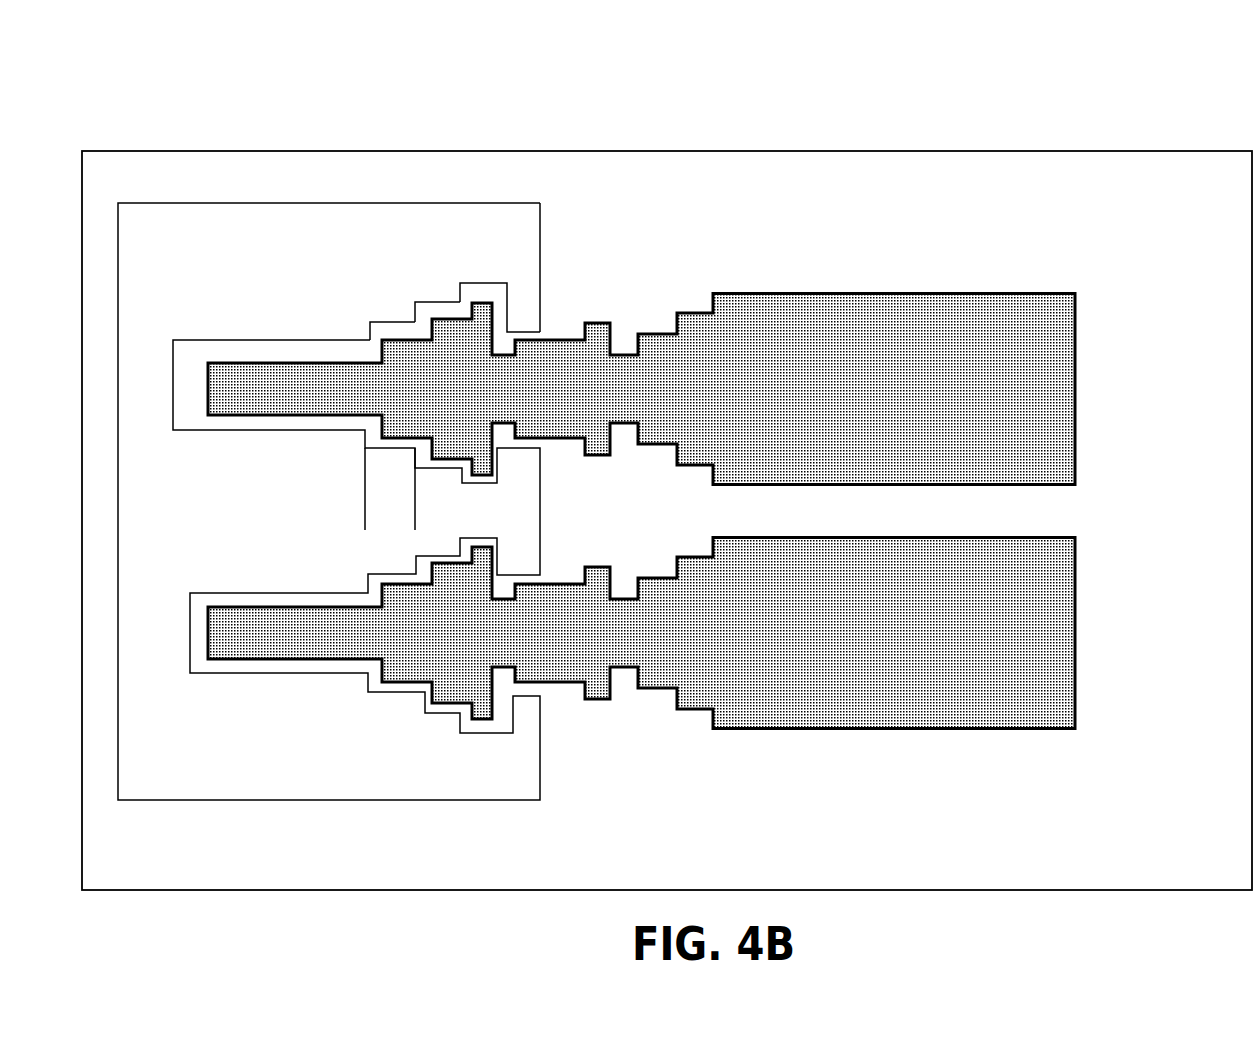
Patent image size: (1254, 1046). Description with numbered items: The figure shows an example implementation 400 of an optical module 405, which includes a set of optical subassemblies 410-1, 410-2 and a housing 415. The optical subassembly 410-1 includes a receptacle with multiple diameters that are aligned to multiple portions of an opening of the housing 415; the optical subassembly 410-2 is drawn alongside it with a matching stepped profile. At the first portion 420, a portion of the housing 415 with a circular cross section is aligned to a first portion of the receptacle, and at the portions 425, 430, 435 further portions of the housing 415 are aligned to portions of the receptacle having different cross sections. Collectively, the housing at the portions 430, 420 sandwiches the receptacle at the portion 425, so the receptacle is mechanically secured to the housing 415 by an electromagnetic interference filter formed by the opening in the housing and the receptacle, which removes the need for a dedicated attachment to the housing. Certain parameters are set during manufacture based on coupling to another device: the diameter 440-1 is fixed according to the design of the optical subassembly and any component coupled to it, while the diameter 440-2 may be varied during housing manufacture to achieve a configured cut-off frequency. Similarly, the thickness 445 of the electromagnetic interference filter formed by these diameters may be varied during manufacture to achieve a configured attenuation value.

The example implementation 400 is at (225, 67).
The optical module 405 is at (768, 223).
The optical subassembly 410-1 is at (942, 390).
The optical subassembly 410-2 is at (942, 643).
The housing 415 is at (301, 254).
The first portion of housing 420 is at (525, 325).
The portion of housing 425 is at (498, 272).
The portion of housing 430 is at (438, 290).
The portion of housing 435 is at (392, 316).
The diameter 440-1 is at (433, 342).
The diameter 440-2 is at (377, 324).
The thickness 445 is at (480, 492).